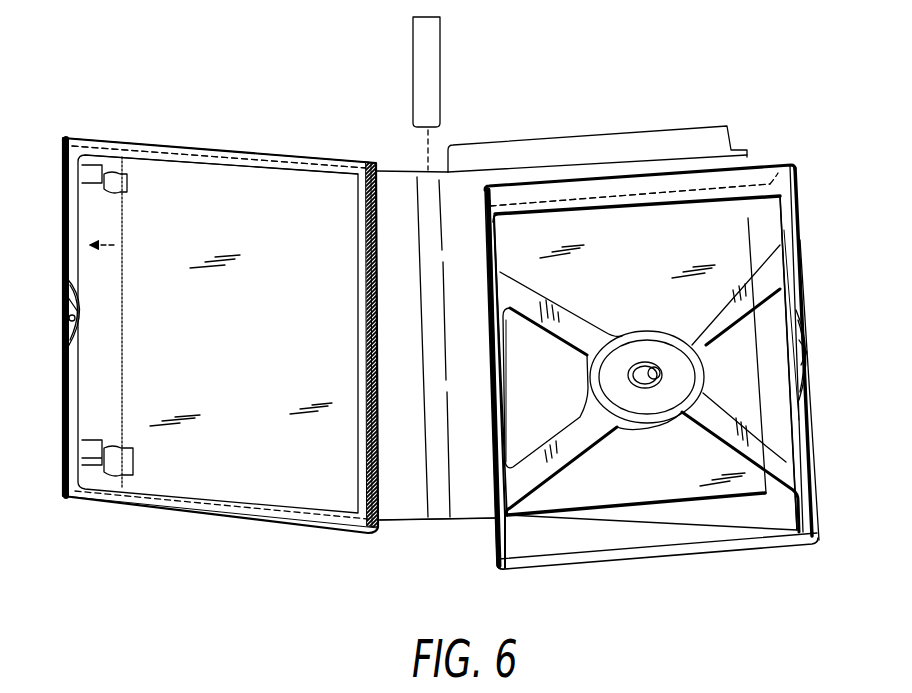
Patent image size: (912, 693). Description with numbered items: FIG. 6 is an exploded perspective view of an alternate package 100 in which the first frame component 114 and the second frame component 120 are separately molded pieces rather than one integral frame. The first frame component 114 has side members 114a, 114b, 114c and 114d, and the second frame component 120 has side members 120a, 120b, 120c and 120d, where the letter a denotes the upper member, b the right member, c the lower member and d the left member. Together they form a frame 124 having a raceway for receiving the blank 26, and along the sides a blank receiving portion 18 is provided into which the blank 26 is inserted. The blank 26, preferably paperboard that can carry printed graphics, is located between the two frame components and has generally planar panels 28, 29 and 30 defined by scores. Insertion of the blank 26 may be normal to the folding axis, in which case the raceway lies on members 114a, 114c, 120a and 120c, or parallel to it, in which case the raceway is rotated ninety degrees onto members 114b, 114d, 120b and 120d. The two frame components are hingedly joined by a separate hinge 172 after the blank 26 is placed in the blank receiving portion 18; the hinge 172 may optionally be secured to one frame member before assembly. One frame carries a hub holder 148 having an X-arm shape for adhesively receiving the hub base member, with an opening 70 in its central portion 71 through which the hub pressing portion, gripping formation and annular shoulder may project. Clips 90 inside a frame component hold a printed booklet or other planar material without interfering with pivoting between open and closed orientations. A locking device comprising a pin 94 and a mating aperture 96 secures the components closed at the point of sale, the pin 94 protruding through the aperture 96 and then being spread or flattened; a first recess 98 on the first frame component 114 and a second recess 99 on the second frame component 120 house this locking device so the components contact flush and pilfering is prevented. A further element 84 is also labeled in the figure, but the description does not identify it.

The blank receiving portion 18 is at (174, 168).
The blank 26 is at (249, 352).
The panel 28 is at (332, 236).
The panel 29 is at (441, 497).
The panel 30 is at (641, 282).
The opening 70 is at (662, 375).
The central portion 71 is at (630, 377).
The flap 84 is at (510, 153).
The clips 90 is at (88, 177).
The pin 94 is at (806, 356).
The mating aperture 96 is at (66, 330).
The first recess 98 is at (66, 302).
The second recess 99 is at (803, 336).
The package 100 is at (597, 101).
The first frame component 114 is at (121, 148).
The upper side member of first frame component 114a is at (262, 173).
The right side member of first frame component 114b is at (372, 302).
The lower side member of first frame component 114c is at (198, 500).
The left side member of first frame component 114d is at (60, 388).
The second frame component 120 is at (760, 164).
The upper side member of second frame component 120a is at (626, 200).
The right side member of second frame component 120b is at (793, 261).
The lower side member of second frame component 120c is at (656, 553).
The left side member of second frame component 120d is at (496, 420).
The frame 124 is at (291, 147).
The hub holder 148 is at (568, 424).
The hinge 172 is at (425, 65).